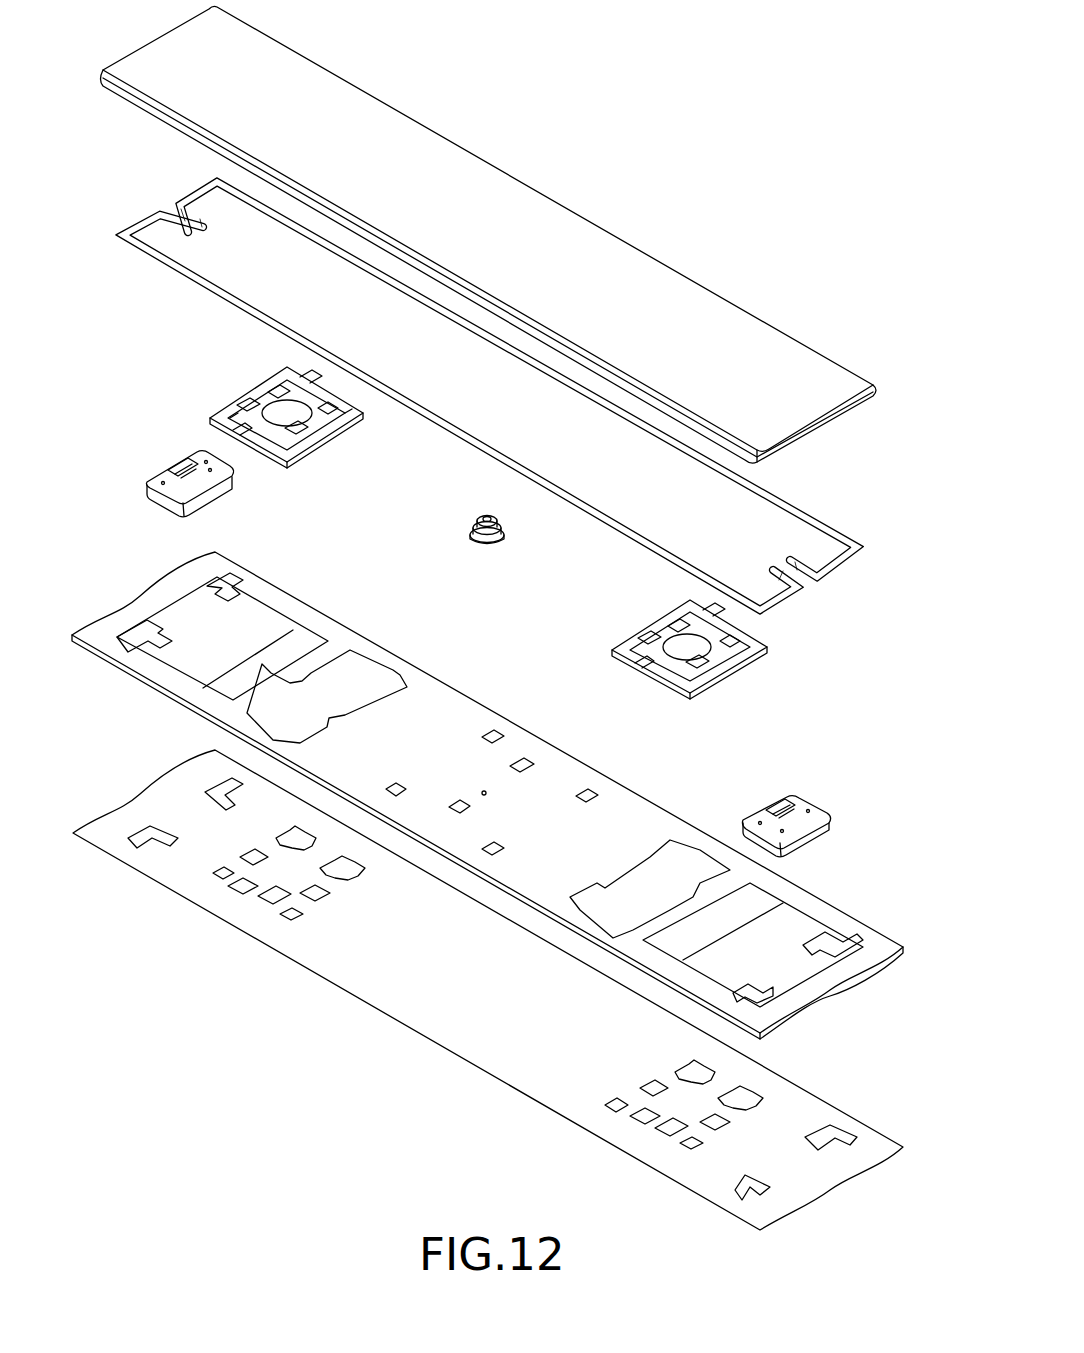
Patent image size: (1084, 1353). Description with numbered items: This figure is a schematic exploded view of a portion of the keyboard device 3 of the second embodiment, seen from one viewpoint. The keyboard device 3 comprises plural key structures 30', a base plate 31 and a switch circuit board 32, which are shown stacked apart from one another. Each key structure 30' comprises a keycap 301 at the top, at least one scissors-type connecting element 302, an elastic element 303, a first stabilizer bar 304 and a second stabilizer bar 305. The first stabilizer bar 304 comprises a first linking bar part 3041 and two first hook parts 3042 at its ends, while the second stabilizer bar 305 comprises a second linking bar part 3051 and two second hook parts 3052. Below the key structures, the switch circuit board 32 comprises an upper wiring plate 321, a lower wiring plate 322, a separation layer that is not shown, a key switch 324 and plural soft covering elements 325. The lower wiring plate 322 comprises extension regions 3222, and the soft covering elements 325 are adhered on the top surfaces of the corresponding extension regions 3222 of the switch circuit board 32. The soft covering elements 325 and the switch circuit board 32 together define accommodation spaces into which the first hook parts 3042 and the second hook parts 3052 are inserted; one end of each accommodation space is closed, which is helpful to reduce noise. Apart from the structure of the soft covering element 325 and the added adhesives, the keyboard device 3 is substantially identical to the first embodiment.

The keyboard device 3 is at (753, 112).
The key structure 30' is at (801, 274).
The keycap 301 is at (583, 236).
The scissors-type connecting element 302 is at (246, 386).
The elastic element 303 is at (480, 514).
The first stabilizer bar 304 is at (470, 413).
The second stabilizer bar 305 is at (525, 379).
The first linking bar part 3041 is at (358, 364).
The first hook part 3042 is at (180, 226).
The second linking bar part 3051 is at (547, 373).
The second hook part 3052 is at (200, 222).
The base plate 31 is at (390, 992).
The switch circuit board 32 is at (488, 797).
The upper wiring plate 321 is at (562, 770).
The lower wiring plate 322 is at (798, 985).
The extension region 3222 is at (182, 608).
The key switch 324 is at (483, 789).
The soft covering element 325 is at (187, 460).